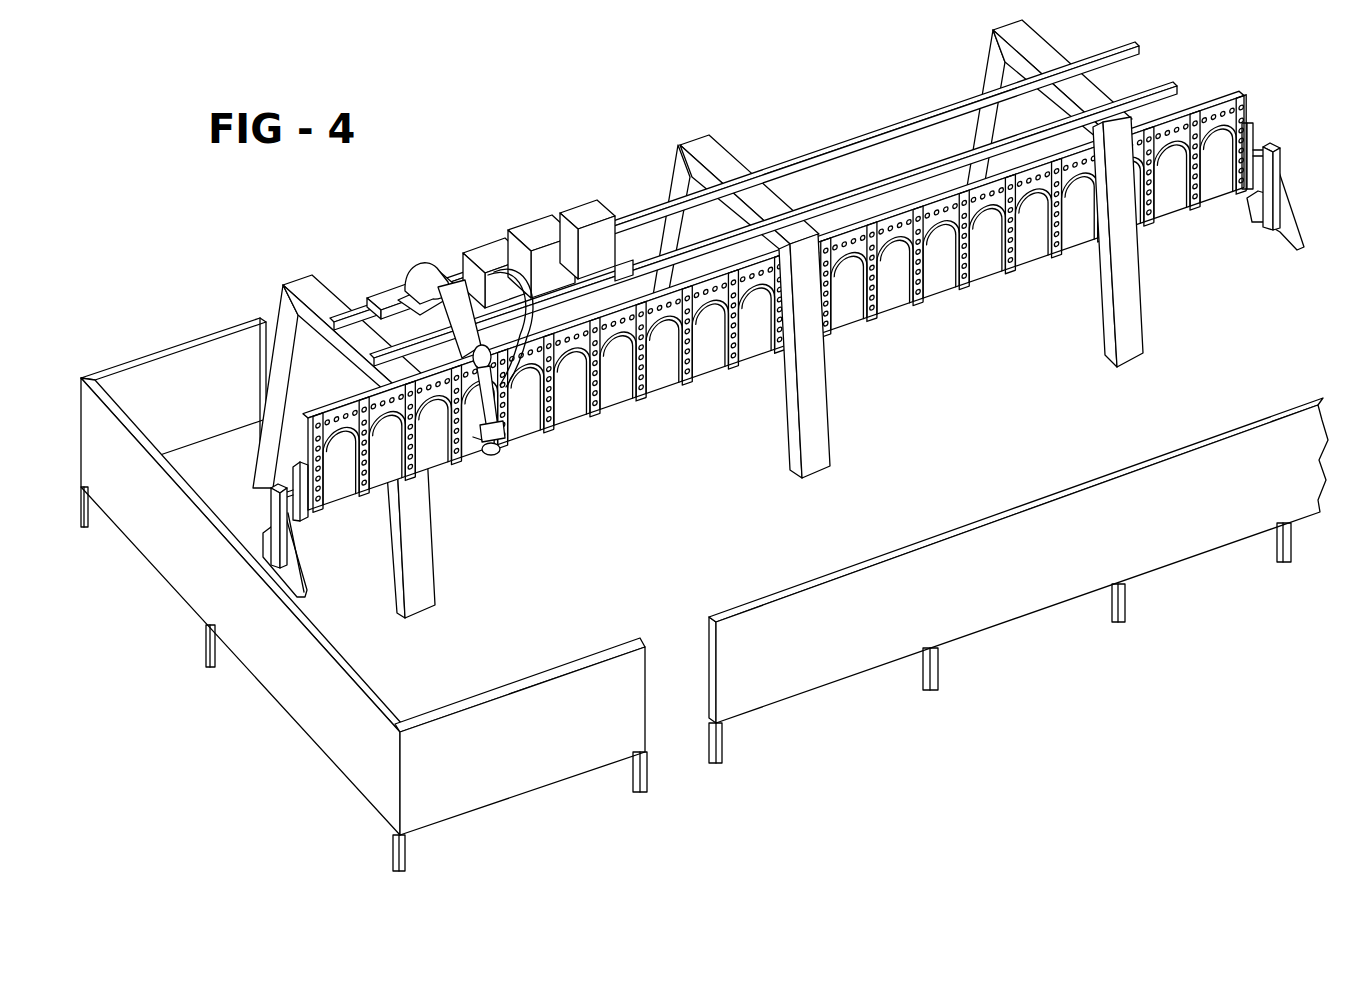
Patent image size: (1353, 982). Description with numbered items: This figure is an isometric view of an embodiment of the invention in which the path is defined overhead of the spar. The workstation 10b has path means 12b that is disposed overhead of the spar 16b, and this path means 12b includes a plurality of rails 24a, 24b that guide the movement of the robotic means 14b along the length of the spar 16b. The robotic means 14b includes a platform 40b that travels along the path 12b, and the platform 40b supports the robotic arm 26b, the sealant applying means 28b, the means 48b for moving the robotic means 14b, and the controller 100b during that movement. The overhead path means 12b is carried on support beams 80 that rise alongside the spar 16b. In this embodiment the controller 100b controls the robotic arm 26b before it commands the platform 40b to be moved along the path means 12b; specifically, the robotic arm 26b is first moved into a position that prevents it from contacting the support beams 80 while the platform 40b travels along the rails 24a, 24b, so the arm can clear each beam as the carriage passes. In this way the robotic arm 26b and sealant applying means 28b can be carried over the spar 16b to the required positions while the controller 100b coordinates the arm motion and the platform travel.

The workstation 10b is at (1272, 109).
The path means 12b is at (885, 112).
The robotic means 14b is at (370, 273).
The spar 16b is at (863, 212).
The rail 24a is at (806, 150).
The rail 24b is at (907, 183).
The robotic arm 26b is at (398, 300).
The sealant applying means 28b is at (553, 322).
The platform 40b is at (370, 294).
The means for moving robotic means 48b is at (588, 188).
The support beams 80 is at (812, 433).
The controller 100b is at (540, 230).